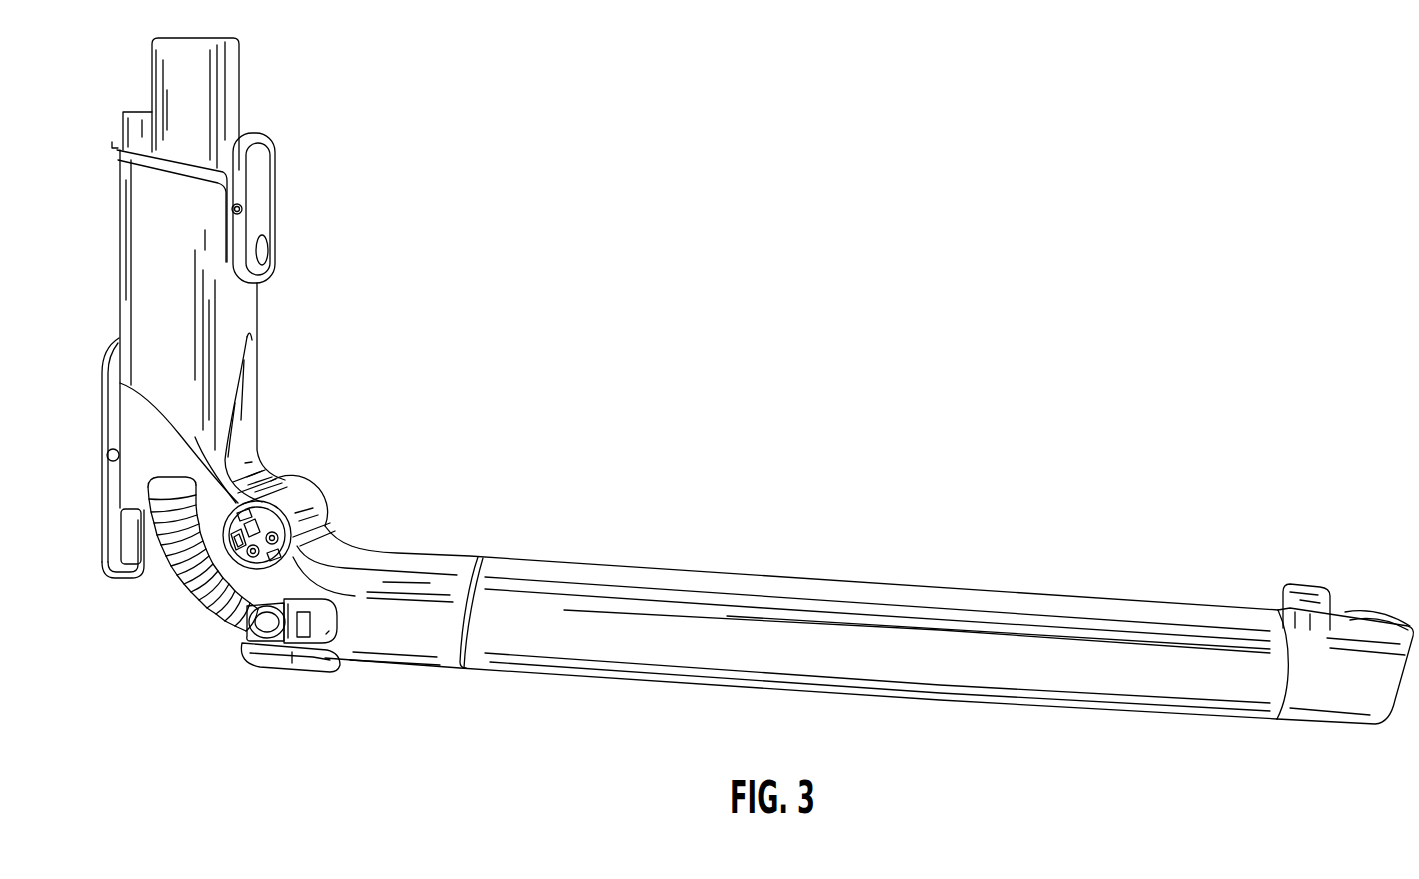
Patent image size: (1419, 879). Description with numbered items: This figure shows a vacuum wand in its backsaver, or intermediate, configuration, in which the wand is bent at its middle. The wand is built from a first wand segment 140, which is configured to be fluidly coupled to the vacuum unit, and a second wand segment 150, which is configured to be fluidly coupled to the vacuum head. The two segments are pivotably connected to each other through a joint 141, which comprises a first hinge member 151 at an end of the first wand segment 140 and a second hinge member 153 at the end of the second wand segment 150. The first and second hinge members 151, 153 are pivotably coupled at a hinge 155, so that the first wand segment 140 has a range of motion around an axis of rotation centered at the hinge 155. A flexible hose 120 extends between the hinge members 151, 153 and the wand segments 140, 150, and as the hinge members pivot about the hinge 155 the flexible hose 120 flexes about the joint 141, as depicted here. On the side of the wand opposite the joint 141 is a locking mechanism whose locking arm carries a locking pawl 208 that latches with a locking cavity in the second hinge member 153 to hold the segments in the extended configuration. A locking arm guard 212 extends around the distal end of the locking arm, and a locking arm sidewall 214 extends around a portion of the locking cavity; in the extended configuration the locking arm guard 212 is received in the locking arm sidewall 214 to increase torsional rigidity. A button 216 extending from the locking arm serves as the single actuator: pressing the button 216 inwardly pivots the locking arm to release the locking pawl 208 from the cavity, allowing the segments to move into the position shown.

The flexible hose 120 is at (215, 606).
The first wand segment 140 is at (222, 352).
The joint 141 is at (505, 316).
The second wand segment 150 is at (865, 628).
The first hinge member 151 is at (225, 410).
The second hinge member 153 is at (445, 560).
The hinge 155 is at (340, 481).
The locking pawl 208 is at (151, 582).
The locking arm guard 212 is at (110, 582).
The locking arm sidewall 214 is at (257, 668).
The button 216 is at (98, 365).